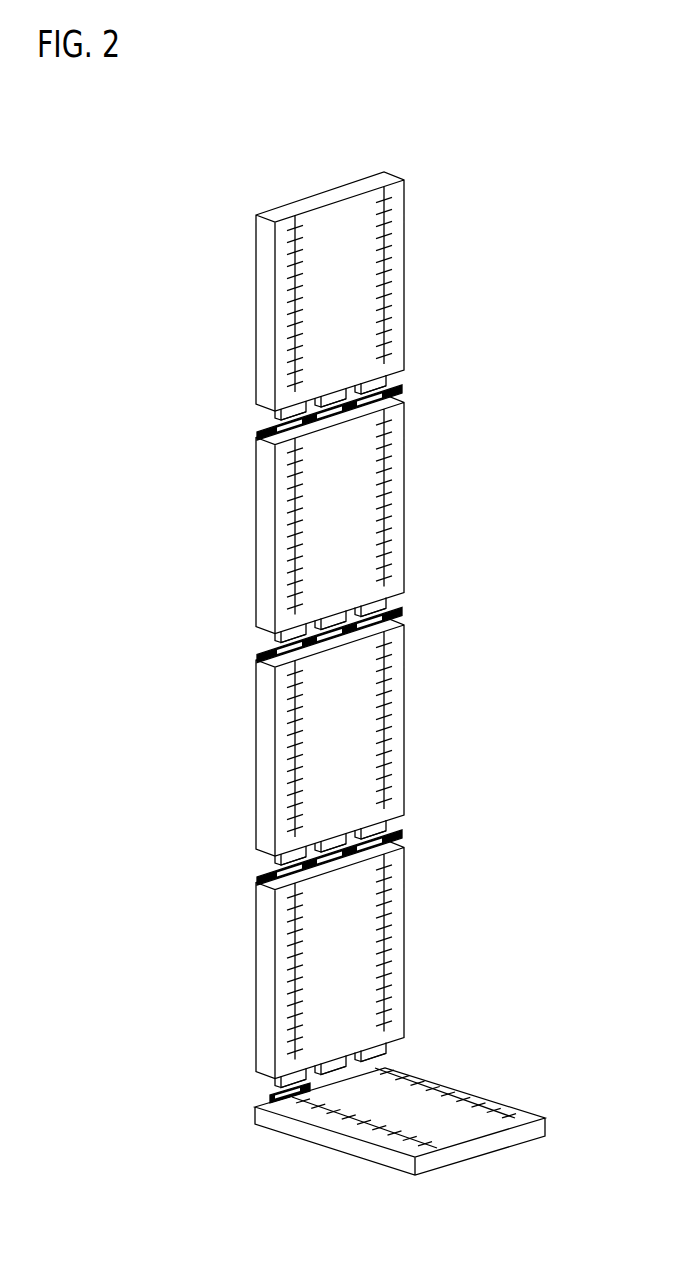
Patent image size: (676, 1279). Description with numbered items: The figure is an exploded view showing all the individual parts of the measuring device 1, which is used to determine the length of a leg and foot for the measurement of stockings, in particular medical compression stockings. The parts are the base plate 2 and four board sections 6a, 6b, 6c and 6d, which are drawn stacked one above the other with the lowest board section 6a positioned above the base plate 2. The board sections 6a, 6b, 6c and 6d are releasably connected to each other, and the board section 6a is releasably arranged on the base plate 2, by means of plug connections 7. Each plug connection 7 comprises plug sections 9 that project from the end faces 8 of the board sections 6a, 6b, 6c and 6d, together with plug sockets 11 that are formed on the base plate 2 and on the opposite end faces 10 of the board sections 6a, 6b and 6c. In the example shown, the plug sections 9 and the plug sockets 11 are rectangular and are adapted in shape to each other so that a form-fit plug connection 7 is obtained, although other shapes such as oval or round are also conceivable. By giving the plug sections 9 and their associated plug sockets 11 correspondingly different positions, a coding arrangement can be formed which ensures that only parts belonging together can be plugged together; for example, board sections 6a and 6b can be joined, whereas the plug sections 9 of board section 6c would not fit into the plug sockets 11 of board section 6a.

The measuring device 1 is at (259, 164).
The base plate 2 is at (490, 1098).
The board section 6a is at (405, 883).
The board section 6b is at (405, 682).
The board section 6c is at (405, 525).
The board section 6d is at (405, 307).
The plug connection 7 is at (413, 372).
The end face 8 is at (393, 373).
The plug section 9 is at (395, 381).
The opposite end face 10 is at (256, 450).
The plug socket 11 is at (272, 437).